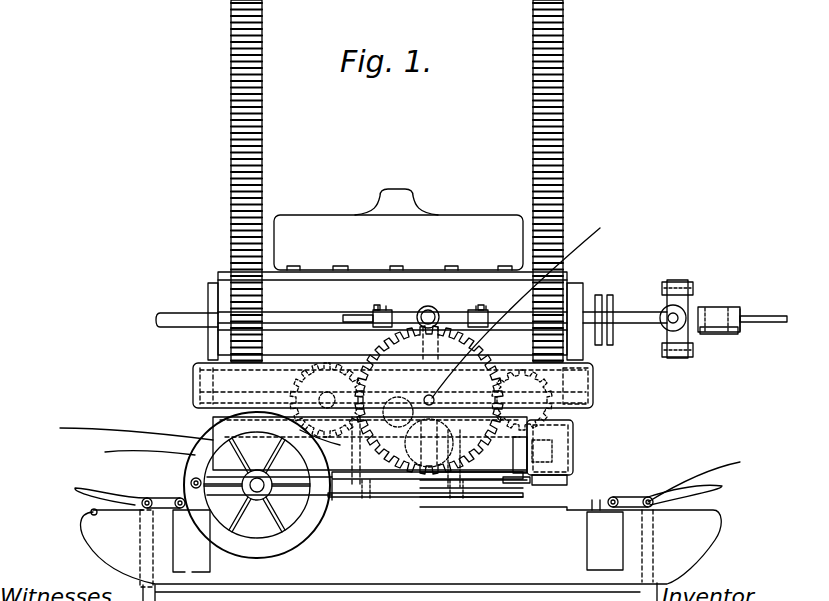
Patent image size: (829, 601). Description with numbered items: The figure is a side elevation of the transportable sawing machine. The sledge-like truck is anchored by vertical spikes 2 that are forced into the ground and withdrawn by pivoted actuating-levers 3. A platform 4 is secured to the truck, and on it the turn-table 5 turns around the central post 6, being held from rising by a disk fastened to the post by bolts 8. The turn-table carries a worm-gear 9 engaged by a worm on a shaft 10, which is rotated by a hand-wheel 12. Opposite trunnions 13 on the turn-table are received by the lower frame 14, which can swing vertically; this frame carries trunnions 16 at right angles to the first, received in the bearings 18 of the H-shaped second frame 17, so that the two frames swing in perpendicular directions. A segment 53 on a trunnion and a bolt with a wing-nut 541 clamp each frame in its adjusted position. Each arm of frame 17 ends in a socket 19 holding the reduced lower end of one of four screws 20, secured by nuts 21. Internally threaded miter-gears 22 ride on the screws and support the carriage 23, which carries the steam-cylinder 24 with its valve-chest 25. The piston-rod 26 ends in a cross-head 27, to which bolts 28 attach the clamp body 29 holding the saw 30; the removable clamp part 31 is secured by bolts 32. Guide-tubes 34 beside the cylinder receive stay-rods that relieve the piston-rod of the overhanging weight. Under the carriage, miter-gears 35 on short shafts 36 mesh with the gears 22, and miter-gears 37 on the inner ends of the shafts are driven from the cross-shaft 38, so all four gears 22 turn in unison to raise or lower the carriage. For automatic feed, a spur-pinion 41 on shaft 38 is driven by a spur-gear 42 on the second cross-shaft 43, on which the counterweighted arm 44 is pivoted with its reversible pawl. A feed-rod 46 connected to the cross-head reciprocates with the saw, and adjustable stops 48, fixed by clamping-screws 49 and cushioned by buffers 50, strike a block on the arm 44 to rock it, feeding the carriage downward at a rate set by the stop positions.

The spike 2 is at (670, 583).
The actuating-lever 3 is at (163, 498).
The platform 4 is at (545, 478).
The turn-table 5 is at (485, 487).
The central post 6 is at (398, 500).
The bolt 8 is at (350, 500).
The worm-gear 9 is at (565, 472).
The shaft 10 is at (258, 490).
The hand-wheel 12 is at (325, 535).
The trunnion 13 is at (565, 448).
The frame 14 is at (510, 497).
The trunnion 16 is at (395, 400).
The second frame 17 is at (450, 500).
The socket or bearing 18 is at (424, 418).
The socket 19 is at (702, 476).
The screw 20 is at (262, 160).
The nut 21 is at (555, 487).
The miter-gear 22 is at (195, 385).
The carriage 23 is at (195, 368).
The steam-cylinder 24 is at (210, 300).
The valve-chest 25 is at (418, 220).
The piston-rod 26 is at (626, 310).
The cross-head 27 is at (674, 280).
The bolt 28 is at (692, 283).
The body of the clamp 29 is at (700, 300).
The saw 30 is at (755, 317).
The removable part of the saw-clamp 31 is at (740, 312).
The bolt 32 is at (728, 308).
The guide-tube 34 is at (165, 328).
The miter-gear 35 is at (220, 417).
The short shaft 36 is at (288, 390).
The miter-gear 37 is at (305, 372).
The shaft 38 is at (326, 447).
The spur-pinion 41 is at (320, 500).
The spur-gear 42 is at (518, 307).
The second cross-shaft 43 is at (478, 365).
The arm 44 is at (426, 354).
The feed-rod 46 is at (632, 323).
The stop 48 is at (345, 316).
The clamping-screw 49 is at (376, 307).
The buffer 50 is at (381, 309).
The segment 53 is at (135, 452).
The wing-nut 541 is at (115, 428).